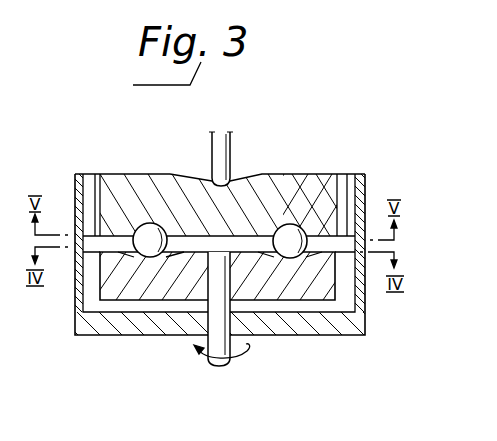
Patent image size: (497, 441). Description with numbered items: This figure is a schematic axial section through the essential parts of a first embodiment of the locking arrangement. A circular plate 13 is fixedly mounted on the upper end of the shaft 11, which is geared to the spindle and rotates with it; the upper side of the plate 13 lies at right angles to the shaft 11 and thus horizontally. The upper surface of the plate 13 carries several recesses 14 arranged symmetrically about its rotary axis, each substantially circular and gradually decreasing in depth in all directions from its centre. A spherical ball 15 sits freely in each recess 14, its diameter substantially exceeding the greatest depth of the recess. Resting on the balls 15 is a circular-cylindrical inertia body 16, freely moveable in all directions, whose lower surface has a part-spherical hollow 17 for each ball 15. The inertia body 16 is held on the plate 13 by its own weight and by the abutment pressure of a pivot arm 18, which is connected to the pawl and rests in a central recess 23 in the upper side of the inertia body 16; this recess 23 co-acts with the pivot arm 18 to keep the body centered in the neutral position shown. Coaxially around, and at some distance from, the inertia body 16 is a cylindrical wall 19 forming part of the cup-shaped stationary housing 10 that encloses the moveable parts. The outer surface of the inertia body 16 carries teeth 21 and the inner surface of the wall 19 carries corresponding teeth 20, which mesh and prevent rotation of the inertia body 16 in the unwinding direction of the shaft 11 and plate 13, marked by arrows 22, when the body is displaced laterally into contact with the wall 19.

The stationary housing 10 is at (115, 337).
The shaft 11 is at (198, 349).
The circular plate 13 is at (278, 294).
The recesses 14 is at (100, 287).
The spherical ball 15 is at (320, 228).
The inertia body 16 is at (303, 184).
The part-spherical hollow 17 is at (143, 223).
The pivot arm 18 is at (229, 142).
The cylindrical wall 19 is at (84, 275).
The teeth 20 is at (90, 174).
The teeth 21 is at (99, 176).
The arrows 22 is at (229, 364).
The central recess 23 is at (200, 176).